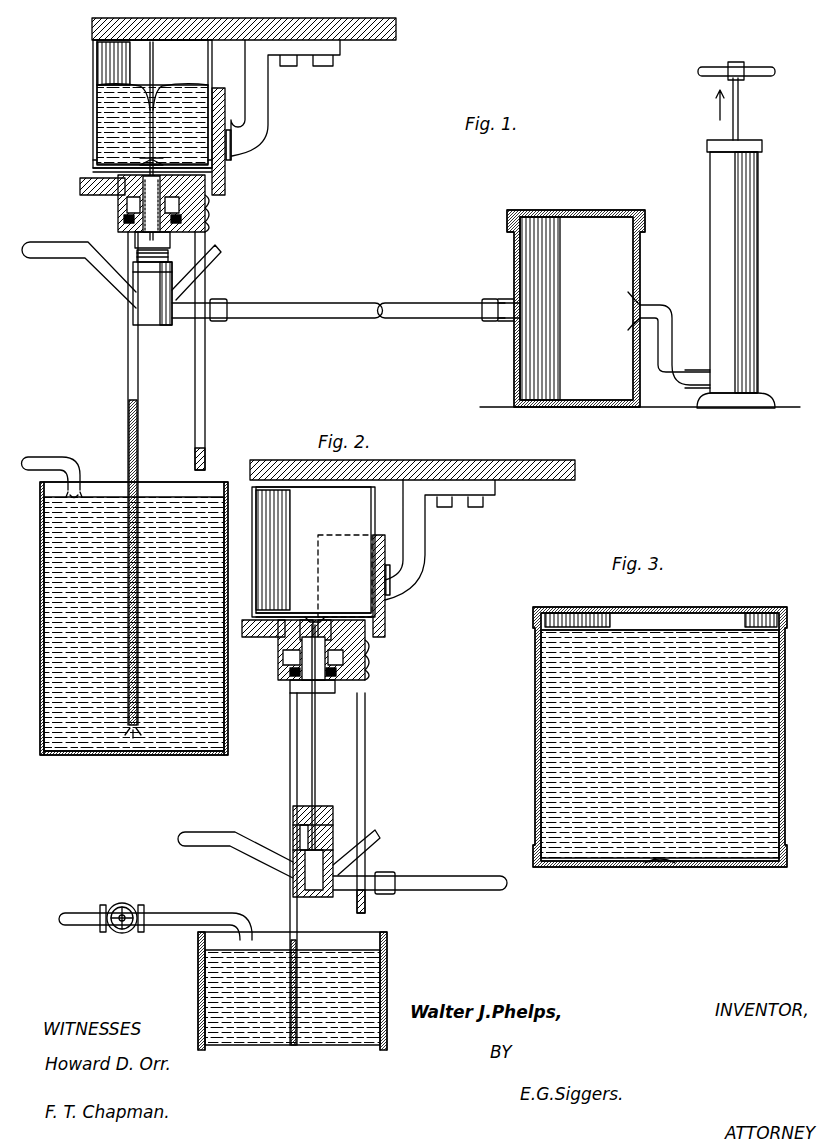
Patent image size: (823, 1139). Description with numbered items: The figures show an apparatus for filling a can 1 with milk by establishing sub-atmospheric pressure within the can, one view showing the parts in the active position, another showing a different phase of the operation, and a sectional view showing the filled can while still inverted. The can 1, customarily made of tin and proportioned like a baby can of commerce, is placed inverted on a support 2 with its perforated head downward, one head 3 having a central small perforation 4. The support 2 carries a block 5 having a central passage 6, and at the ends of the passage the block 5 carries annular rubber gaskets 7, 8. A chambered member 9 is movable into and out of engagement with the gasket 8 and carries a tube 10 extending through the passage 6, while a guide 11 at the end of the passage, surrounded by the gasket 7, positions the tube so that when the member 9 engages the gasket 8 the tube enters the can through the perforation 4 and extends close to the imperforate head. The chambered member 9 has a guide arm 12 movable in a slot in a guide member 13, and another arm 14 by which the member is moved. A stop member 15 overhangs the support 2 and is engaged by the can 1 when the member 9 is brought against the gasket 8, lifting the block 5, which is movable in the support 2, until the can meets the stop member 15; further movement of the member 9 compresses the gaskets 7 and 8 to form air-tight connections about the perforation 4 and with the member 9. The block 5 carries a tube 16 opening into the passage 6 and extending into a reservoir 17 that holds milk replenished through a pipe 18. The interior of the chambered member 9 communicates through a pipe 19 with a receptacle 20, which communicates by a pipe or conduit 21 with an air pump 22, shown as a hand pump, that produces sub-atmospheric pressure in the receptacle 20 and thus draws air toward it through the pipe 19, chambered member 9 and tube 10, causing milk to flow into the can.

In FIG. 1, the can 1 is at (96, 118).
In FIG. 2, the can 1 is at (256, 526).
In FIG. 3, the can 1 is at (540, 755).
In FIG. 1, the support 2 is at (100, 195).
In FIG. 2, the support 2 is at (260, 637).
In FIG. 1, the head 3 is at (112, 165).
In FIG. 2, the head 3 is at (344, 617).
In FIG. 3, the head 3 is at (592, 862).
In FIG. 1, the perforation 4 is at (156, 162).
In FIG. 2, the perforation 4 is at (312, 618).
In FIG. 3, the perforation 4 is at (655, 866).
In FIG. 1, the block 5 is at (212, 203).
In FIG. 2, the block 5 is at (368, 650).
In FIG. 1, the passage 6 is at (128, 225).
In FIG. 2, the passage 6 is at (332, 680).
In FIG. 1, the gasket 7 is at (93, 172).
In FIG. 2, the gasket 7 is at (330, 622).
In FIG. 1, the gasket 8 is at (172, 238).
In FIG. 2, the gasket 8 is at (330, 687).
In FIG. 1, the chambered member 9 is at (158, 326).
In FIG. 2, the chambered member 9 is at (318, 898).
In FIG. 1, the tube 10 is at (156, 62).
In FIG. 2, the tube 10 is at (317, 762).
In FIG. 1, the guide 11 is at (225, 183).
In FIG. 2, the guide 11 is at (280, 665).
In FIG. 1, the guide arm 12 is at (208, 262).
In FIG. 2, the guide arm 12 is at (360, 840).
In FIG. 1, the guide member 13 is at (206, 404).
In FIG. 2, the guide member 13 is at (366, 778).
In FIG. 1, the arm 14 is at (62, 258).
In FIG. 2, the arm 14 is at (210, 834).
In FIG. 1, the stop member 15 is at (156, 36).
In FIG. 2, the stop member 15 is at (283, 460).
In FIG. 1, the tube 16 is at (128, 398).
In FIG. 2, the tube 16 is at (290, 900).
In FIG. 1, the reservoir 17 is at (96, 756).
In FIG. 2, the reservoir 17 is at (198, 982).
In FIG. 1, the pipe 18 is at (58, 458).
In FIG. 2, the pipe 18 is at (178, 912).
In FIG. 1, the pipe 19 is at (350, 302).
In FIG. 2, the pipe 19 is at (446, 876).
In FIG. 1, the receptacle 20 is at (507, 268).
In FIG. 1, the pipe or conduit 21 is at (668, 330).
In FIG. 1, the air pump 22 is at (746, 216).